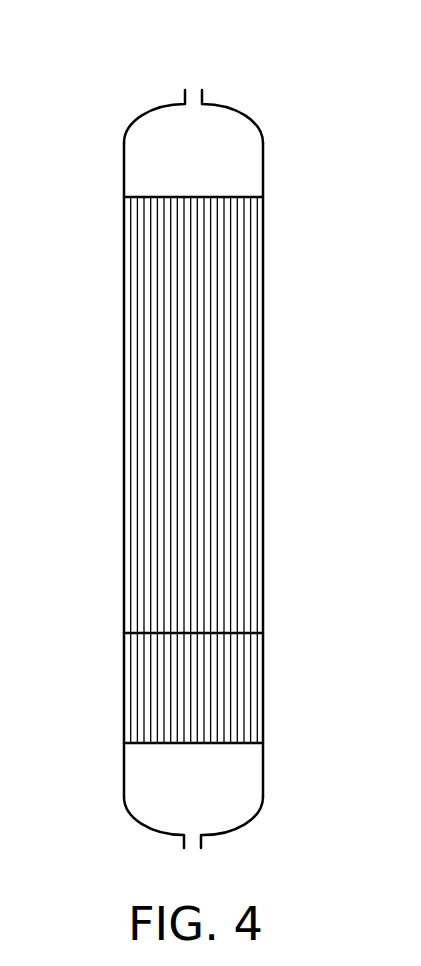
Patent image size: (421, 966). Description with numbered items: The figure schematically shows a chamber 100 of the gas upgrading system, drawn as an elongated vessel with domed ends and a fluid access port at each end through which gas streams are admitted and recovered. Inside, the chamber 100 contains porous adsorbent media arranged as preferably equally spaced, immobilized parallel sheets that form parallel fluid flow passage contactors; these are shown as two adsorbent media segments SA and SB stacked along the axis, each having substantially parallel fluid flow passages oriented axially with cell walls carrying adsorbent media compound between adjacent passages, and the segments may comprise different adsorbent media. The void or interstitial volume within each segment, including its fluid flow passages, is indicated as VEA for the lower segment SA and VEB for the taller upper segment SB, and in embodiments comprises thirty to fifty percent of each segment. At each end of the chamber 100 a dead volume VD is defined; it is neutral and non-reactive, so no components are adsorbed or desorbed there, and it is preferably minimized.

The chamber 100 is at (194, 431).
The dead volume VD is at (194, 158).
The void volume of segment S_B VEB is at (187, 422).
The void volume of segment S_A VEA is at (187, 687).
The adsorbent media segment SB is at (277, 200).
The adsorbent media segment SA is at (277, 636).